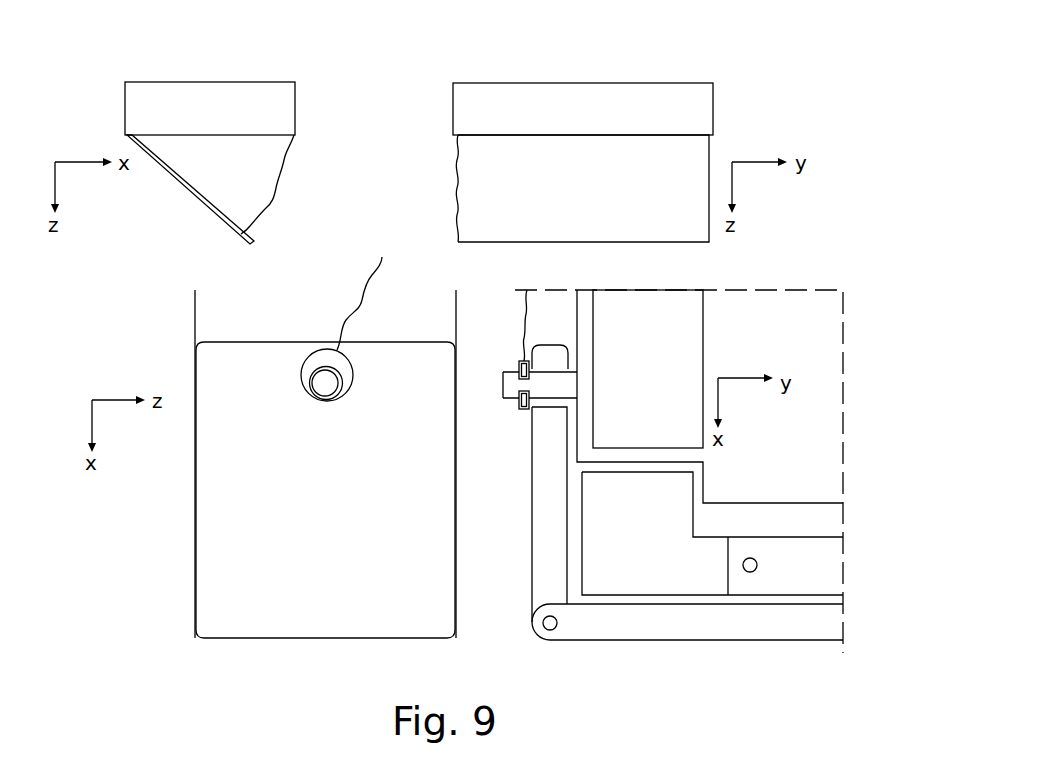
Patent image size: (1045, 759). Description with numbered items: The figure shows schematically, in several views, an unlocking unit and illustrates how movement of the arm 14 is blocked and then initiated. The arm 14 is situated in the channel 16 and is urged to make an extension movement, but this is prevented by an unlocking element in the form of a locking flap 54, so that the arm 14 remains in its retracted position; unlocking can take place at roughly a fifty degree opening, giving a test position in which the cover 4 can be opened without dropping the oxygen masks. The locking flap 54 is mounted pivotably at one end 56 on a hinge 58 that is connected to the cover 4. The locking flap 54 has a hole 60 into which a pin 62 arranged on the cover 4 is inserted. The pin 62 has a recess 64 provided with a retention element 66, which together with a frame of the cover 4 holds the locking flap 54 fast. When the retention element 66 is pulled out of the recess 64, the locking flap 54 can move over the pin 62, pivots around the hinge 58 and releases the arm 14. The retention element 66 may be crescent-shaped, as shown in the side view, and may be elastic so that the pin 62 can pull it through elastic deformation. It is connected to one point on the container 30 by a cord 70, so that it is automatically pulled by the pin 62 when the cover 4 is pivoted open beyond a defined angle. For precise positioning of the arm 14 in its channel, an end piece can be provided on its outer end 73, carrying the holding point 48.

The container 30 is at (243, 93).
The cover 4 is at (176, 178).
The cord 70 is at (276, 181).
The retention element 66 is at (344, 378).
The recess 64 is at (519, 371).
The hole 60 is at (572, 371).
The pin 62 is at (560, 380).
The locking flap 54 is at (550, 486).
The end 56 is at (525, 619).
The hinge 58 is at (551, 631).
The holding point 48 is at (650, 583).
The outer end 73 is at (706, 607).
The channel 16 is at (757, 515).
The arm 14 is at (780, 552).